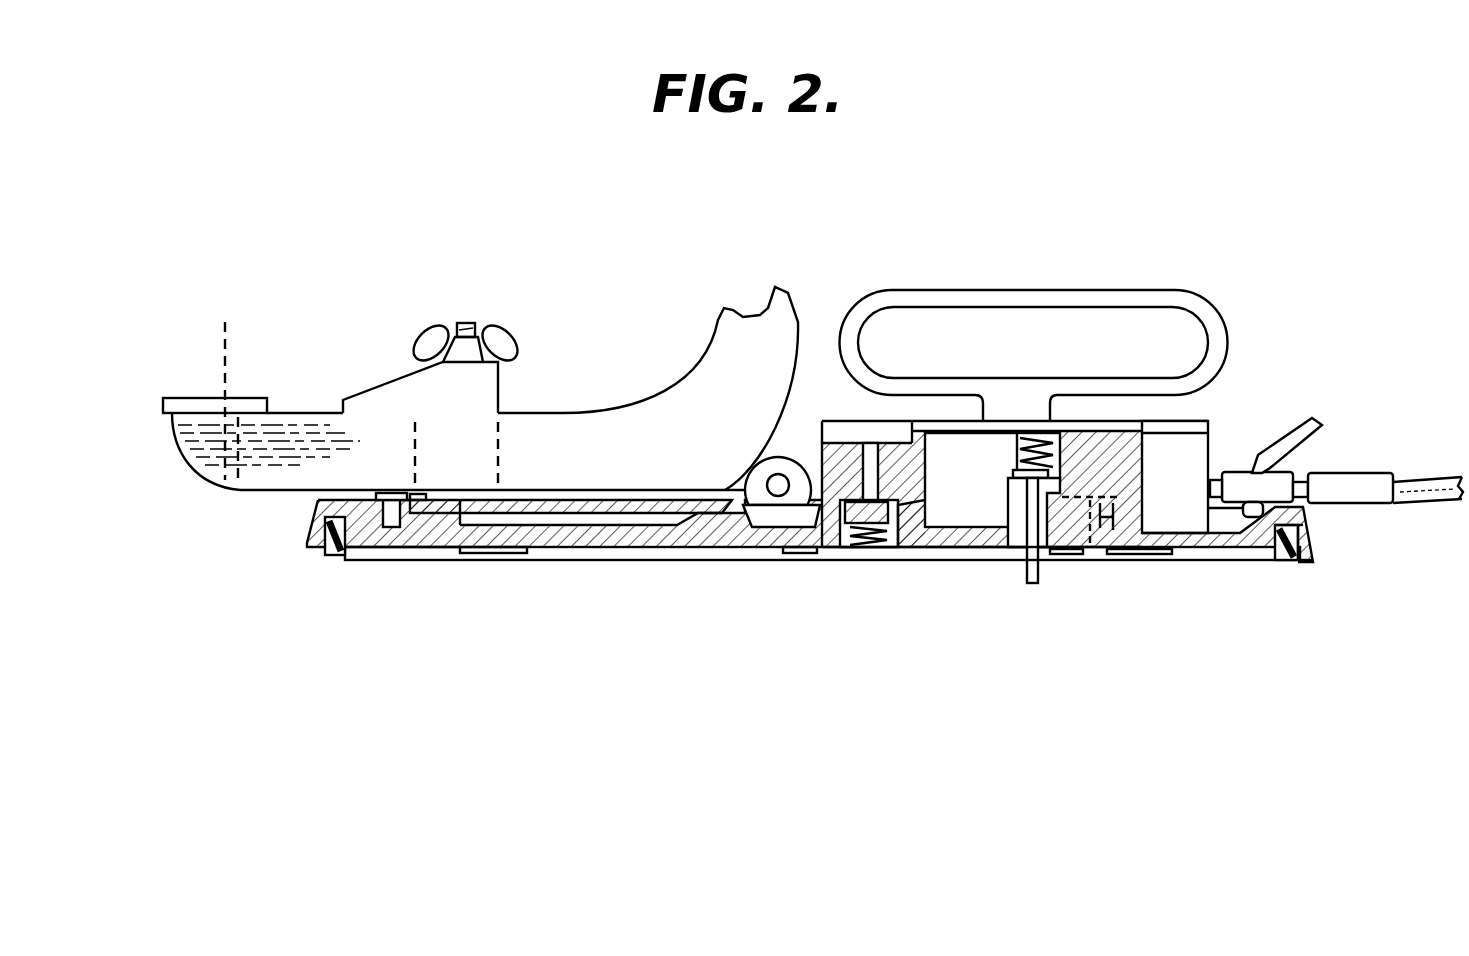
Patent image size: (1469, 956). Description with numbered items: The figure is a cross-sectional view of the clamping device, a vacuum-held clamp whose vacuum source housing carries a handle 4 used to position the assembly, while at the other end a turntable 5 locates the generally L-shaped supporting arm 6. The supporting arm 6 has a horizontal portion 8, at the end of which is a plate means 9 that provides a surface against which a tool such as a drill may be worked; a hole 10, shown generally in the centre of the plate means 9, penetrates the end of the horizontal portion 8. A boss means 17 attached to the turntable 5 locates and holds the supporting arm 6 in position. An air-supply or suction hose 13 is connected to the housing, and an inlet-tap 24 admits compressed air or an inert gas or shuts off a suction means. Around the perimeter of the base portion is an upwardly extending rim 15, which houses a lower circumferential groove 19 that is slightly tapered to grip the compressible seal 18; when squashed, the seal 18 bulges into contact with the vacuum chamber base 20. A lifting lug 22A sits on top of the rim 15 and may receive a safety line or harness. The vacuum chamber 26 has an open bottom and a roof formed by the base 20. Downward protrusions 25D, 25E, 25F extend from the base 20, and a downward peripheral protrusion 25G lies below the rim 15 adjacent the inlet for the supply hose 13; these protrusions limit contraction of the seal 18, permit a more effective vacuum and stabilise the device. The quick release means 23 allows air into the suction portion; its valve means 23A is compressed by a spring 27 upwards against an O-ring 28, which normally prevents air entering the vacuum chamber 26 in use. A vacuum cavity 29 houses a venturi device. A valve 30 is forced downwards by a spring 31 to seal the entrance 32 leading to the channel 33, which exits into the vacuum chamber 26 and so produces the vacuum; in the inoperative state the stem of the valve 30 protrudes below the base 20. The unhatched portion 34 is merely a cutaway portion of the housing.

The handle 4 is at (1090, 300).
The turntable 5 is at (690, 497).
The supporting arm 6 is at (735, 322).
The horizontal portion 8 is at (298, 468).
The plate means 9 is at (178, 398).
The hole 10 is at (224, 384).
The air-supply hose 13 is at (1422, 490).
The upwardly extending rim 15 is at (1305, 509).
The boss means 17 is at (375, 395).
The compressible seal 18 is at (333, 556).
The lower circumferential groove 19 is at (1306, 530).
The vacuum chamber base 20 is at (1221, 560).
The lifting lug 22A is at (775, 475).
The quick release means 23 is at (830, 418).
The valve means 23A is at (872, 440).
The inlet-tap 24 is at (1252, 488).
The downward protrusion 25D is at (500, 556).
The downward protrusion 25E is at (815, 557).
The downward protrusion 25F is at (1141, 556).
The peripheral protrusion 25G is at (1307, 565).
The vacuum chamber 26 is at (615, 553).
The spring 27 is at (868, 556).
The O-ring 28 is at (921, 553).
The vacuum cavity 29 is at (968, 440).
The valve 30 is at (1026, 585).
The spring 31 is at (1030, 440).
The entrance 32 is at (1011, 497).
The channel 33 is at (1076, 550).
The cutaway portion 34 is at (1183, 455).